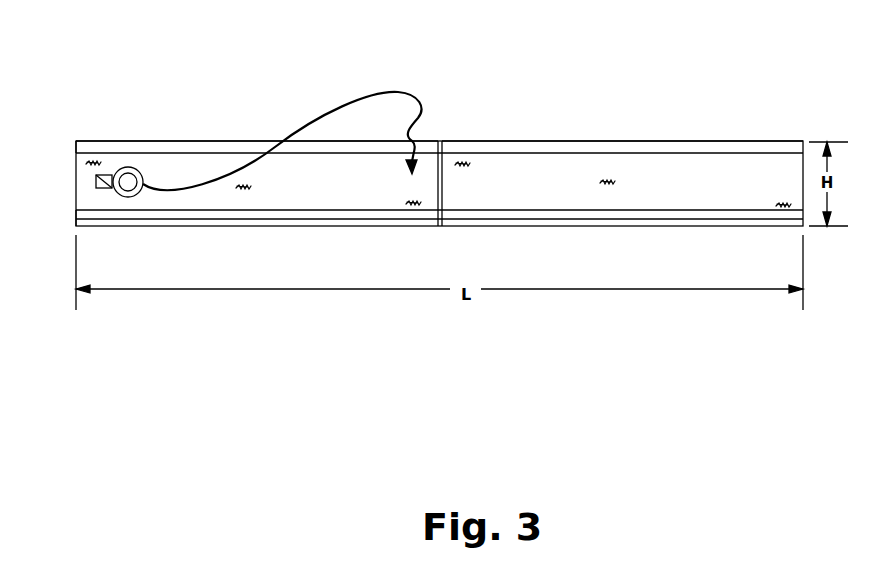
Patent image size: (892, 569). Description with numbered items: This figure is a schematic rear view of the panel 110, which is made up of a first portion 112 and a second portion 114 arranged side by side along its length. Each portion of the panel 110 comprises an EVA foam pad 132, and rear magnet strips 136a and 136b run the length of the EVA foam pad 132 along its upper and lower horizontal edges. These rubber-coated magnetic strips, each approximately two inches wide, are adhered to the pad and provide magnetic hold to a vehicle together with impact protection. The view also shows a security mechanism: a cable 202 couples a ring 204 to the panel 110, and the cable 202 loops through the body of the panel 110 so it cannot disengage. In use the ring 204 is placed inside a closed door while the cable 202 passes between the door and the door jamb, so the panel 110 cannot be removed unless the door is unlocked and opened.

The panel 110 is at (520, 335).
The first portion 112 is at (169, 170).
The second portion 114 is at (742, 191).
The EVA foam pad 132 is at (223, 165).
The rear magnet strip 136a is at (73, 149).
The rear magnet strip 136b is at (73, 214).
The cable 202 is at (313, 117).
The ring 204 is at (125, 166).